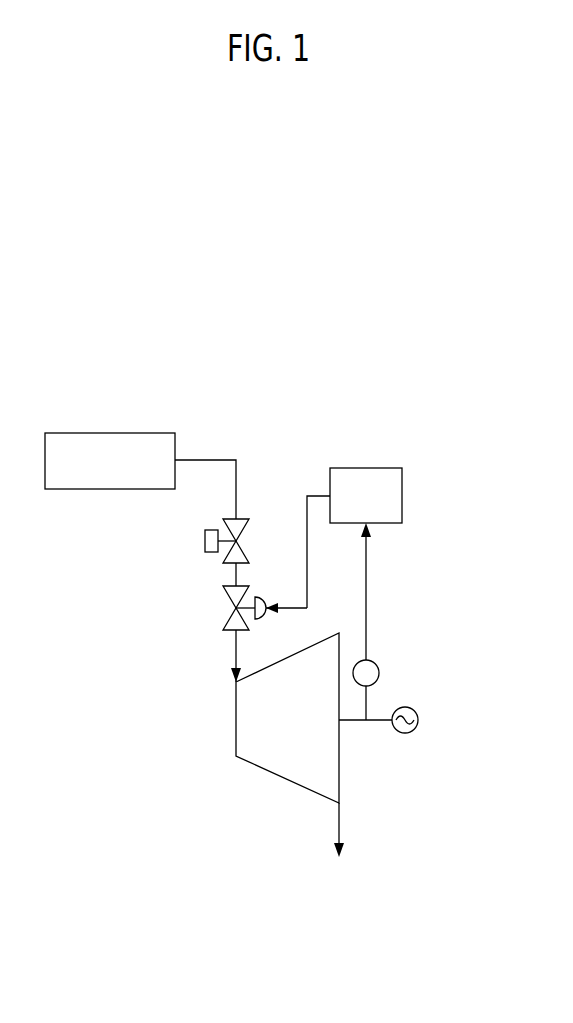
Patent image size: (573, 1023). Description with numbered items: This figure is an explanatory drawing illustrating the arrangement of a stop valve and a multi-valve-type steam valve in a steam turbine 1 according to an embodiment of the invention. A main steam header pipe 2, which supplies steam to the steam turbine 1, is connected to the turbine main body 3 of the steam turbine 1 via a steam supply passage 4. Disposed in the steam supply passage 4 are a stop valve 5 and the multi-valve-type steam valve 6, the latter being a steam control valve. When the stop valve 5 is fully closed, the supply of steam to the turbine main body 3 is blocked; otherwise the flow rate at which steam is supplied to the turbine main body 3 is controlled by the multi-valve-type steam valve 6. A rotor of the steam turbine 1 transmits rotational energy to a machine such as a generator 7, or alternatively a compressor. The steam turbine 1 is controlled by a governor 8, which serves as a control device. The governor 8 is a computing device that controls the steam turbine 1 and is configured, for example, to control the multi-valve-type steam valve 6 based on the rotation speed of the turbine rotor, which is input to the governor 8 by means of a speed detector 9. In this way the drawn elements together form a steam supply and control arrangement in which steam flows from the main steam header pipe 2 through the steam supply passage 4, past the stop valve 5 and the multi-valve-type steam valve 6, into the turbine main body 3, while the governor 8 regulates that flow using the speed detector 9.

The steam turbine 1 is at (464, 450).
The main steam header pipe 2 is at (112, 433).
The turbine main body 3 is at (241, 722).
The steam supply passage 4 is at (216, 460).
The stop valve 5 is at (205, 540).
The multi-valve-type steam valve 6 is at (258, 597).
The generator 7 is at (414, 708).
The governor 8 is at (402, 496).
The speed detector 9 is at (379, 667).